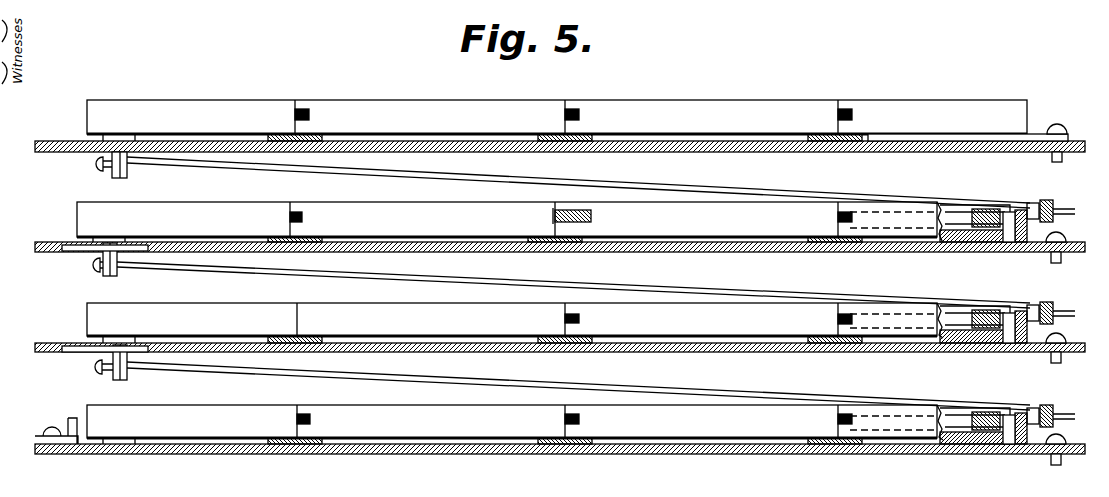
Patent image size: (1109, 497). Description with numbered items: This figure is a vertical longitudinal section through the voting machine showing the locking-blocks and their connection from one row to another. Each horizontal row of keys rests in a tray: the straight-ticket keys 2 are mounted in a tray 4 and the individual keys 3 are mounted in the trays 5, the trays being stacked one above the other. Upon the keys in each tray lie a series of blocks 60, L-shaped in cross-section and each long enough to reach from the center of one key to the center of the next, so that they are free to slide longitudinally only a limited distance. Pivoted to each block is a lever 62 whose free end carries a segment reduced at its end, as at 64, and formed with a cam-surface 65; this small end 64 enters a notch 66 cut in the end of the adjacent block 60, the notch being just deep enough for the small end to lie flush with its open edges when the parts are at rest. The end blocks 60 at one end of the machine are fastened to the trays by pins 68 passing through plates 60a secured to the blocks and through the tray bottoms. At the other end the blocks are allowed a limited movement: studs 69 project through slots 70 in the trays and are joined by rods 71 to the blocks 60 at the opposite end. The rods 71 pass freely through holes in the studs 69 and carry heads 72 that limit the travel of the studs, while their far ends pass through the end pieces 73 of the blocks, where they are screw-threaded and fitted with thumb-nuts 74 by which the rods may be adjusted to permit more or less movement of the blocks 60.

The straight-ticket key 2 is at (322, 137).
The individual key 3 is at (552, 250).
The tray 4 is at (694, 150).
The tray 5 is at (656, 250).
The locking block 60 is at (552, 272).
The plate 60a is at (1035, 138).
The lever 62 is at (962, 220).
The small end of segment 64 is at (305, 110).
The cam-surface 65 is at (553, 216).
The notch 66 is at (580, 115).
The pin 68 is at (1058, 162).
The stud 69 is at (120, 178).
The slot 70 is at (78, 252).
The rod 71 is at (440, 168).
The head 72 is at (96, 166).
The end piece 73 is at (1030, 222).
The thumb-nut 74 is at (1040, 206).